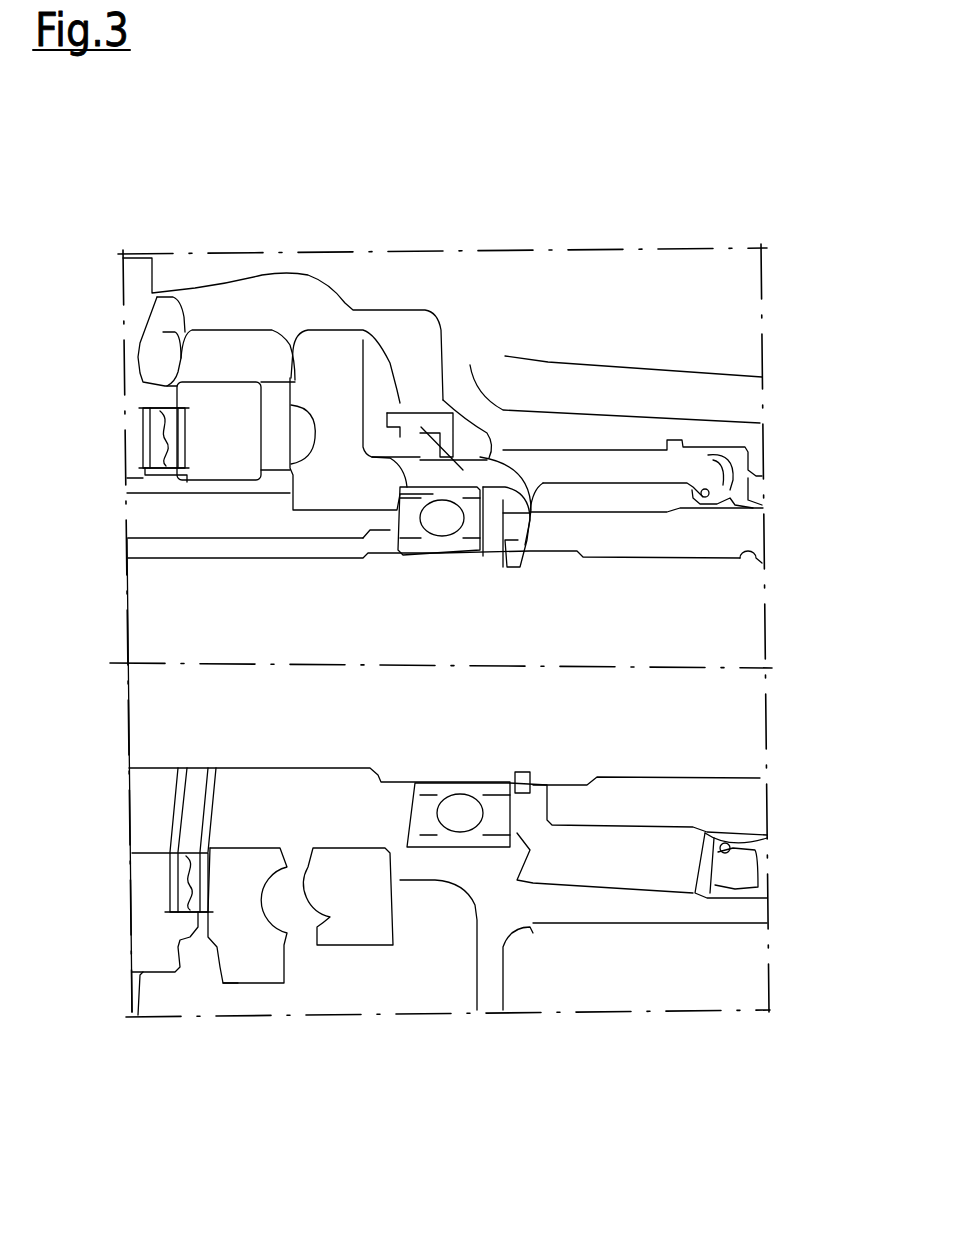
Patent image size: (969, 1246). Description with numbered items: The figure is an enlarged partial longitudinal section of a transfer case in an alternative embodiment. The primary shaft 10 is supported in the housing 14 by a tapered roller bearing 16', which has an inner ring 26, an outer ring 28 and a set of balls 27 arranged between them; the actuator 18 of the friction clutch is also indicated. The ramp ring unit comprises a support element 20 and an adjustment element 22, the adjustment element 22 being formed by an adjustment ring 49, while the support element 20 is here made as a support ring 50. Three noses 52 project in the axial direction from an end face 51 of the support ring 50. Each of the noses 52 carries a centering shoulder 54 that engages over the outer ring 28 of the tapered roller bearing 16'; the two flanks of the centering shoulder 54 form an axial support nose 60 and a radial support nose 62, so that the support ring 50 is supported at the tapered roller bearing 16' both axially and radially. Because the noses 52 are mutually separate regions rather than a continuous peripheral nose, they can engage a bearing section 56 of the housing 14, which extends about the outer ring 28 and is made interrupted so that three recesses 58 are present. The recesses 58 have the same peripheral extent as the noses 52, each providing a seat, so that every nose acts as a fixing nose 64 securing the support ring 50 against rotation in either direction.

The primary shaft 10 is at (725, 662).
The housing 14 is at (445, 307).
The tapered roller bearing 16' is at (550, 294).
The actuator 18 is at (314, 272).
The support element 20 is at (337, 928).
The adjustment element 22 is at (248, 957).
The inner ring 26 is at (503, 790).
The balls 27 is at (448, 818).
The outer ring 28 is at (432, 830).
The adjustment ring 49 is at (230, 950).
The support ring 50 is at (357, 913).
The end face 51 is at (408, 905).
The noses 52 is at (410, 487).
The centering shoulder 54 is at (390, 470).
The bearing section 56 is at (415, 470).
The recesses 58 is at (400, 418).
The axial support nose 60 is at (395, 495).
The radial support nose 62 is at (397, 527).
The fixing nose 64 is at (446, 400).